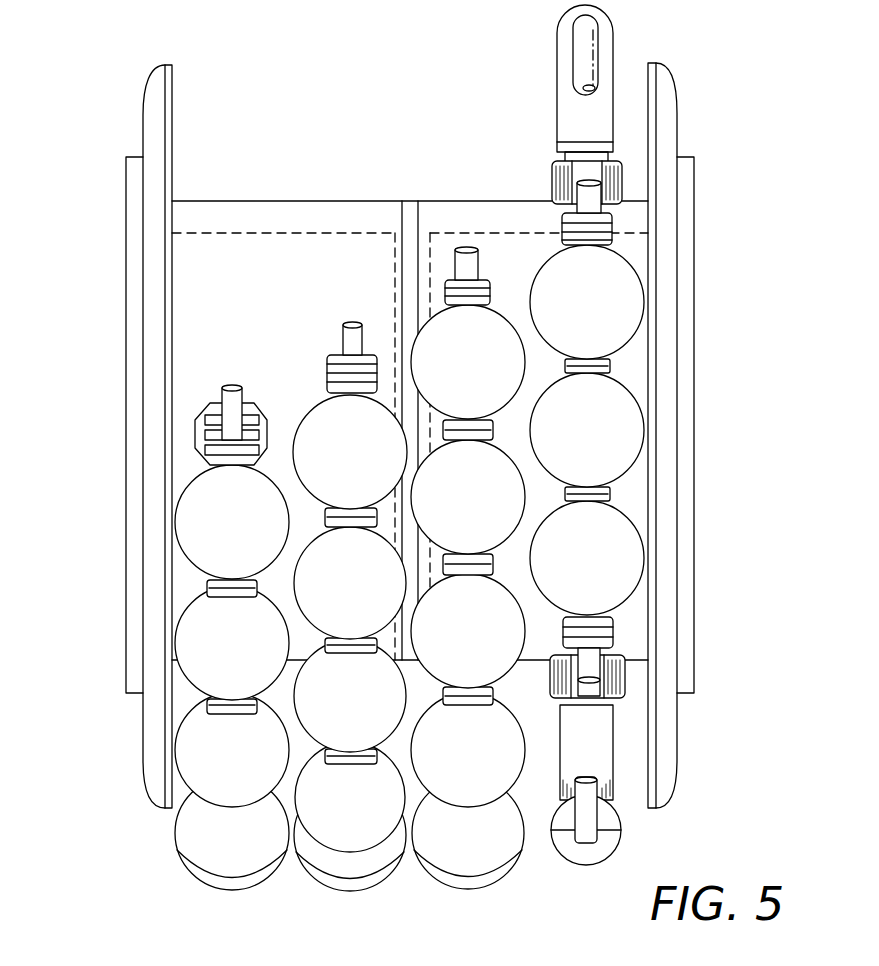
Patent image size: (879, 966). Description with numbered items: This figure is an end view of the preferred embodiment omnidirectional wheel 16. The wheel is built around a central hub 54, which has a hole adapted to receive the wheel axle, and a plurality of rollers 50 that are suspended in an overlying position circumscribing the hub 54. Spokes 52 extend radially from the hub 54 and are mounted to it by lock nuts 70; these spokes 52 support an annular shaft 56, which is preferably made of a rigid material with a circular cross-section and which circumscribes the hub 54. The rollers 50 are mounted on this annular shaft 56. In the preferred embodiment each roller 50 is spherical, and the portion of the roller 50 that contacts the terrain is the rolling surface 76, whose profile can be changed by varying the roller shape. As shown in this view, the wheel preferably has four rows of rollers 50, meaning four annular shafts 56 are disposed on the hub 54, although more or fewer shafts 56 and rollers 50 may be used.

The omnidirectional wheel 16 is at (146, 831).
The roller 50 is at (187, 527).
The spoke 52 is at (608, 40).
The hub 54 is at (257, 204).
The annular shaft 56 is at (222, 394).
The lock nut 70 is at (551, 177).
The rolling surface 76 is at (233, 890).